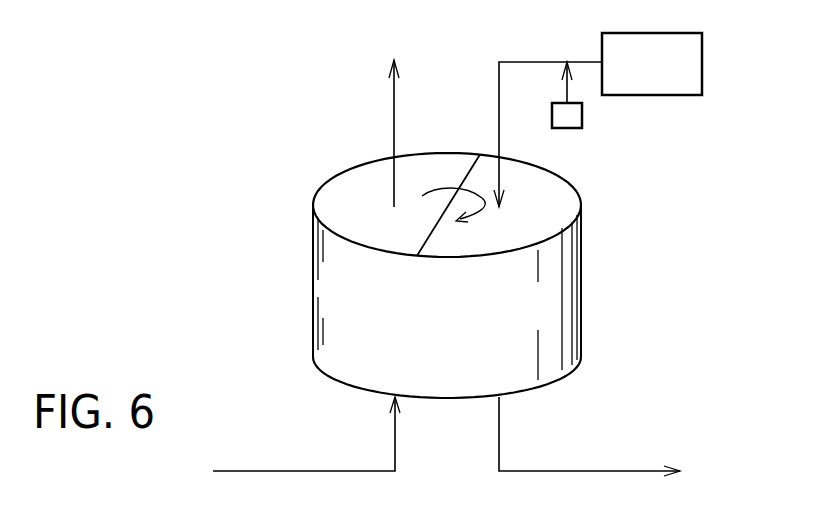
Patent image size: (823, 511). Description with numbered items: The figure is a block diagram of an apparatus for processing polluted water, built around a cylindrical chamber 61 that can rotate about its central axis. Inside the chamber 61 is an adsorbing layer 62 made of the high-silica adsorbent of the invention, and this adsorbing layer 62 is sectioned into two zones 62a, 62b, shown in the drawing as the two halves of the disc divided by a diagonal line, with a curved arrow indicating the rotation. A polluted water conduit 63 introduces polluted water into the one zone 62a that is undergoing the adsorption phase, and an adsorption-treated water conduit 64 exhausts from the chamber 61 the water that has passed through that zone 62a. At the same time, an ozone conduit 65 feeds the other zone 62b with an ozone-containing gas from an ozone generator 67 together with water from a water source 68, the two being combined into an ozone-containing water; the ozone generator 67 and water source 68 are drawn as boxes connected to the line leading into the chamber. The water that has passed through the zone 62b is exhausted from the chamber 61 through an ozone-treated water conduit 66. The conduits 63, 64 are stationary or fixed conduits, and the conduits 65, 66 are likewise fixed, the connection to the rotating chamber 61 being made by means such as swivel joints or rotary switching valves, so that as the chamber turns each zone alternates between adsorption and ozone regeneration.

The cylindrical chamber 61 is at (580, 300).
The adsorbing layer 62 is at (450, 221).
The zone of adsorbing layer 62a is at (338, 189).
The zone of adsorbing layer 62b is at (557, 190).
The polluted water conduit 63 is at (307, 471).
The adsorption-treated water conduit 64 is at (542, 62).
The ozone conduit 65 is at (617, 471).
The ozone-treated water conduit 66 is at (394, 107).
The ozone generator 67 is at (680, 95).
The water source 68 is at (582, 115).